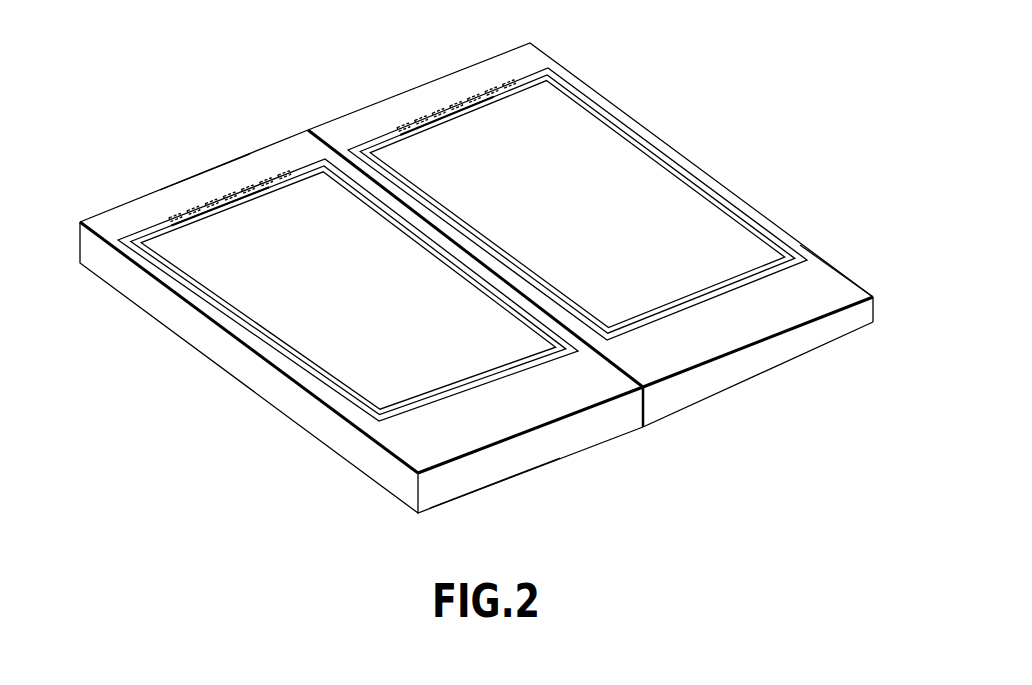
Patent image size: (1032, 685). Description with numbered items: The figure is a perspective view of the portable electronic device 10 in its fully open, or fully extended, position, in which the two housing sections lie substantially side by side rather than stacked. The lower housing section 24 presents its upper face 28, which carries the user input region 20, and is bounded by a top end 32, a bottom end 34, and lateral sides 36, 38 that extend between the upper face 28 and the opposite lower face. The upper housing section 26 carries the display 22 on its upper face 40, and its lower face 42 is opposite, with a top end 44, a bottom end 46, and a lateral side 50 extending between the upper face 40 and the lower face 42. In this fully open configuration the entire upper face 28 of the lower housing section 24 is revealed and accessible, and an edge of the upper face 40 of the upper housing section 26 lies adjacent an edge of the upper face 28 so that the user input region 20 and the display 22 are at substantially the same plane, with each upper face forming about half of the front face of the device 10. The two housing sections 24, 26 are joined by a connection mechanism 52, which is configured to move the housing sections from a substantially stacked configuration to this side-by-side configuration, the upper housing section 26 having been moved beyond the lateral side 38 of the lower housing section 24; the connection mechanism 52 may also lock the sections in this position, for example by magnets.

The device 10 is at (153, 121).
The user input region 20 is at (323, 360).
The display 22 is at (655, 197).
The lower housing section 24 is at (477, 485).
The upper housing section 26 is at (845, 335).
The upper face 28 is at (120, 213).
The top end 32 is at (227, 162).
The bottom end 34 is at (540, 445).
The lateral side 36 is at (157, 310).
The lateral side 38 is at (645, 418).
The upper face 40 is at (563, 83).
The lower face 42 is at (732, 382).
The top end 44 is at (458, 72).
The bottom end 46 is at (782, 348).
The lateral side 50 is at (842, 270).
The connection mechanism 52 is at (309, 126).